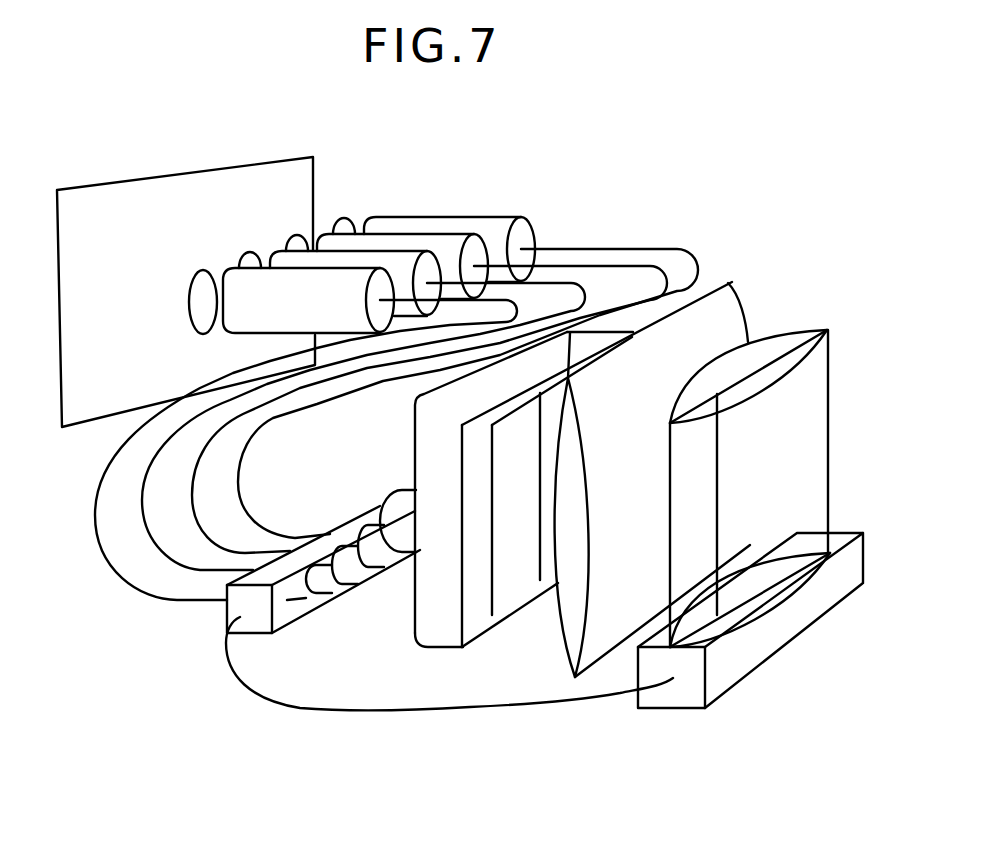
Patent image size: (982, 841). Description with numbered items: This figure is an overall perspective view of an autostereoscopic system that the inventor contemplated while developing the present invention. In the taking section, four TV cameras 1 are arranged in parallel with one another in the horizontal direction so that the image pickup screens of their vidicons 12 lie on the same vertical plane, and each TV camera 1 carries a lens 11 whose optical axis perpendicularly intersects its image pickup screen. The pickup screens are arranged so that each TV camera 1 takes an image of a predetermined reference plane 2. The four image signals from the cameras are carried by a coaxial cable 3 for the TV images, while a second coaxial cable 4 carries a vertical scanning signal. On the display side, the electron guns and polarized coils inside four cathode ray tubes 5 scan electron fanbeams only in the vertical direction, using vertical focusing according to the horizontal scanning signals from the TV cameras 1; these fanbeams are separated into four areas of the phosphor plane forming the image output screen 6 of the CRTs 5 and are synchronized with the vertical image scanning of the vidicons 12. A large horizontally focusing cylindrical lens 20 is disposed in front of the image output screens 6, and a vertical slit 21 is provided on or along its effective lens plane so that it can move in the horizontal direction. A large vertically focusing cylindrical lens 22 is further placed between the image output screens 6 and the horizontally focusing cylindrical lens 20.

The TV camera 1 is at (389, 222).
The reference plane 2 is at (110, 210).
The coaxial cable 3 is at (93, 574).
The coaxial cable 4 is at (268, 700).
The cathode ray tube 5 is at (440, 642).
The image output screen 6 is at (480, 630).
The lens 11 is at (353, 227).
The vidicon 12 is at (513, 217).
The horizontally focusing cylindrical lens 20 is at (782, 350).
The vertical slit 21 is at (717, 508).
The vertically focusing cylindrical lens 22 is at (723, 303).